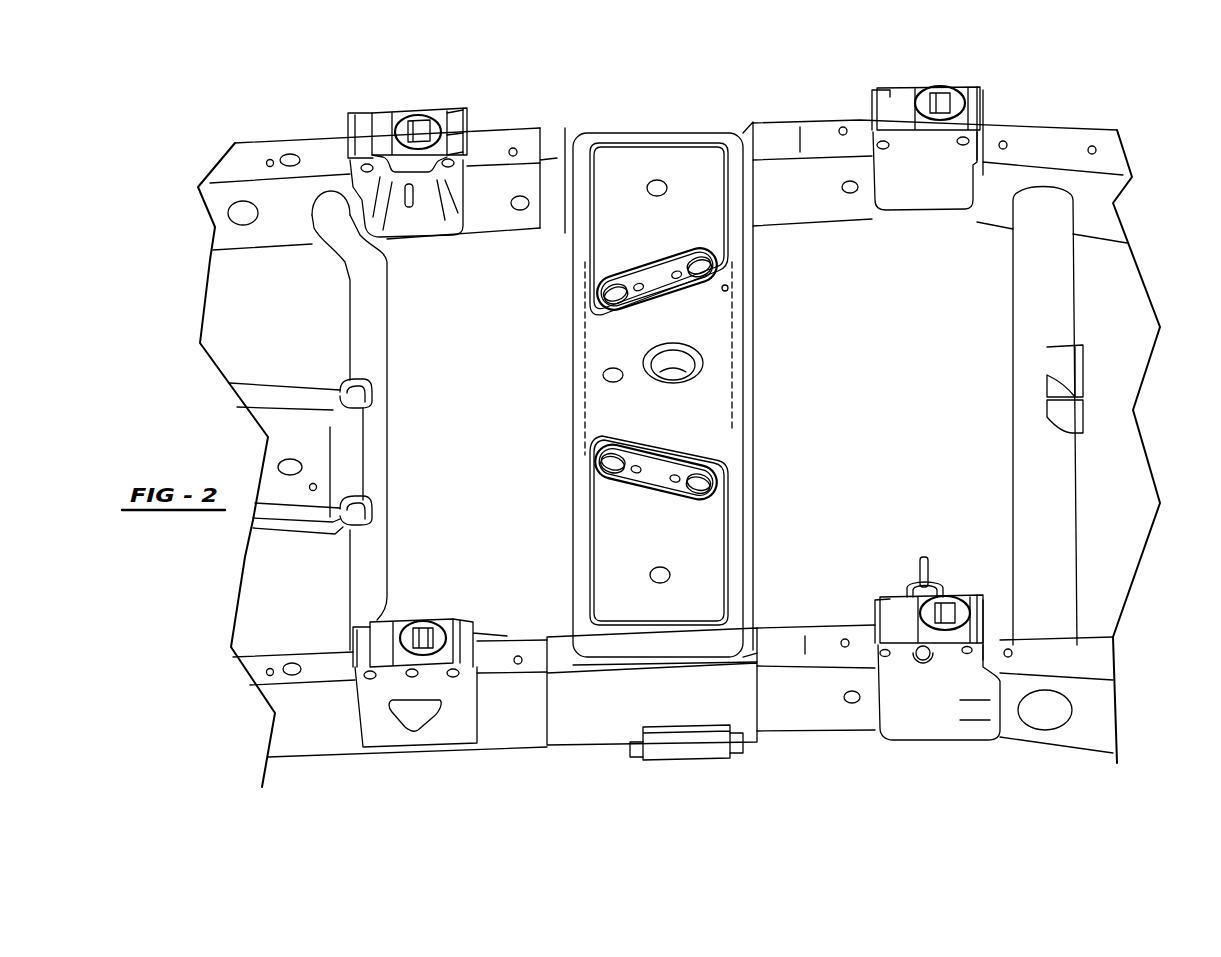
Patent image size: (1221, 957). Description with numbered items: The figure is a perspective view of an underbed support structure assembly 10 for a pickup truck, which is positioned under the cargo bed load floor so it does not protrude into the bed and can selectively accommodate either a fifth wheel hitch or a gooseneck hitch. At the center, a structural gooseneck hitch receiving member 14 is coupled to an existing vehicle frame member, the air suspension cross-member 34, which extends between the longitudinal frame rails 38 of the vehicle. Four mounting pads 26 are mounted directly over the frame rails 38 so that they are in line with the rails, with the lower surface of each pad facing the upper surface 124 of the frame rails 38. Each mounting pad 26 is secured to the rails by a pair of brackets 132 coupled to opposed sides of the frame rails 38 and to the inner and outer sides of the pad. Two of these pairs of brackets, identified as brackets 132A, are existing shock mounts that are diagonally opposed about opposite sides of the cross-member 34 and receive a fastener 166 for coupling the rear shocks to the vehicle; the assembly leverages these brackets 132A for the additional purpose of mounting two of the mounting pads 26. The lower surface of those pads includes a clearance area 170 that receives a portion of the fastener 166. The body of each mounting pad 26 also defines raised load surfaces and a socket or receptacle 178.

The underbed support structure assembly 10 is at (1135, 100).
The structural gooseneck hitch receiving member 14 is at (732, 323).
The mounting pads 26 is at (391, 92).
The air suspension cross-member 34 is at (750, 401).
The longitudinal frame rails 38 is at (773, 120).
The upper surface 124 is at (487, 147).
The brackets 132 is at (353, 112).
The brackets 132A is at (440, 210).
The fastener 166 is at (415, 205).
The clearance area 170 is at (443, 110).
The receptacle 178 is at (421, 115).